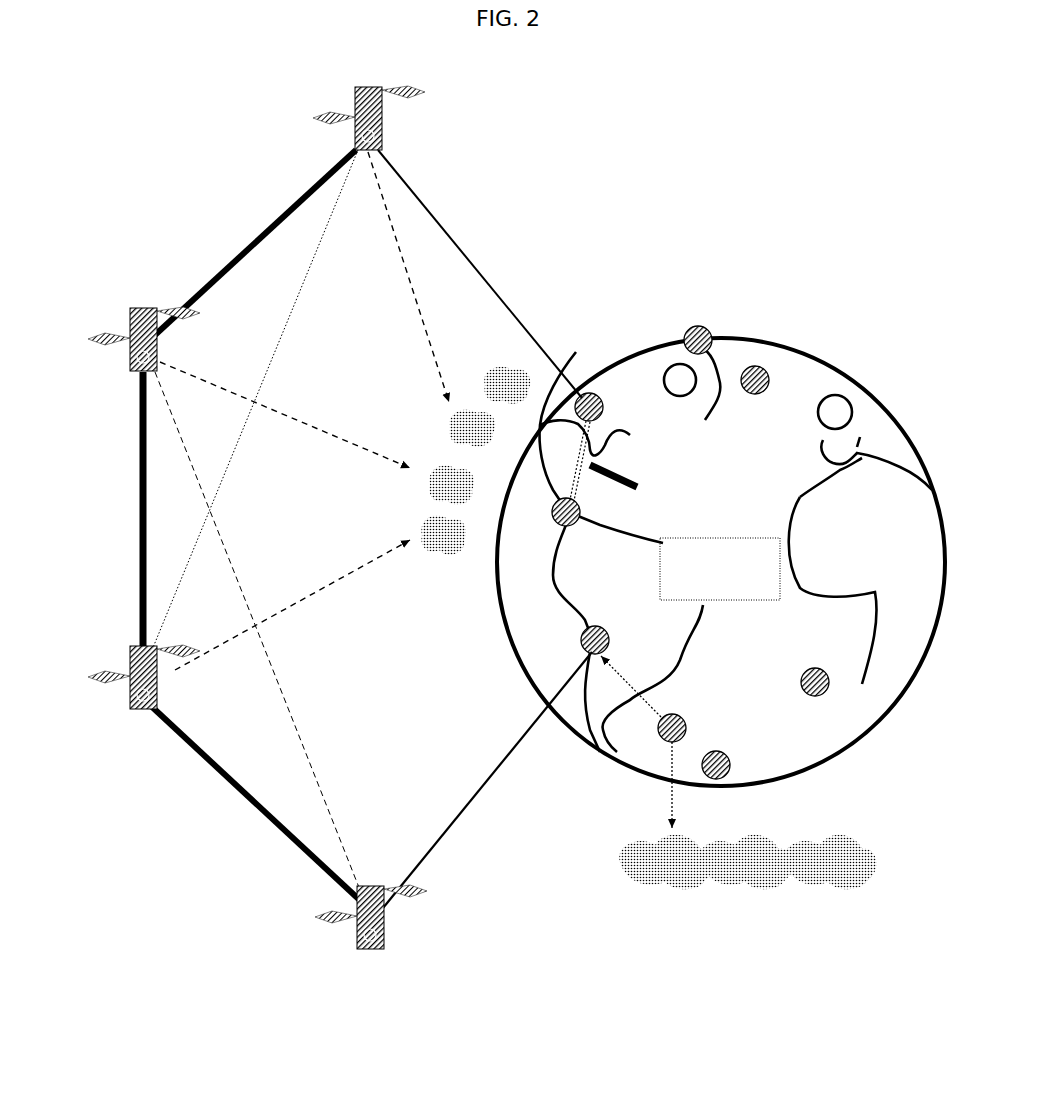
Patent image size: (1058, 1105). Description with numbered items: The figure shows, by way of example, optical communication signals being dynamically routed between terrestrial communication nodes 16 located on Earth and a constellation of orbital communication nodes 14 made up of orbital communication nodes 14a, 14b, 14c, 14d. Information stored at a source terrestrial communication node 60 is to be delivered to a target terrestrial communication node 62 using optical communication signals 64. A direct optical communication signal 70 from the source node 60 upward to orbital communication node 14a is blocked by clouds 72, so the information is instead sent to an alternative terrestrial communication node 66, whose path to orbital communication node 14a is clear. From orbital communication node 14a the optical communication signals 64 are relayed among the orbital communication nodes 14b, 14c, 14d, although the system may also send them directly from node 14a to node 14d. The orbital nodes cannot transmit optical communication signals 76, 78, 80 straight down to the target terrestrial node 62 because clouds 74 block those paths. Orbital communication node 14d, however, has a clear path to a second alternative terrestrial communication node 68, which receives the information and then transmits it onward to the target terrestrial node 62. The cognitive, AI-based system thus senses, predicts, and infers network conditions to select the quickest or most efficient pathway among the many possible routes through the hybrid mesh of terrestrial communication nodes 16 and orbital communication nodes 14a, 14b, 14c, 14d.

The orbital communication nodes 14 is at (234, 519).
The orbital communication node 14a is at (371, 933).
The orbital communication node 14b is at (121, 677).
The orbital communication node 14c is at (121, 339).
The orbital communication node 14d is at (369, 103).
The terrestrial communication nodes 16 is at (753, 766).
The source terrestrial communication node 60 is at (687, 728).
The target terrestrial communication node 62 is at (582, 511).
The optical communication signals 64 is at (480, 250).
The alternative terrestrial communication node 66 is at (611, 639).
The alternative terrestrial communication node 68 is at (605, 407).
The optical communication signal 70 is at (678, 803).
The clouds 72 is at (747, 862).
The clouds 74 is at (475, 461).
The optical communication signal 76 is at (292, 605).
The optical communication signal 78 is at (285, 415).
The optical communication signal 80 is at (408, 277).